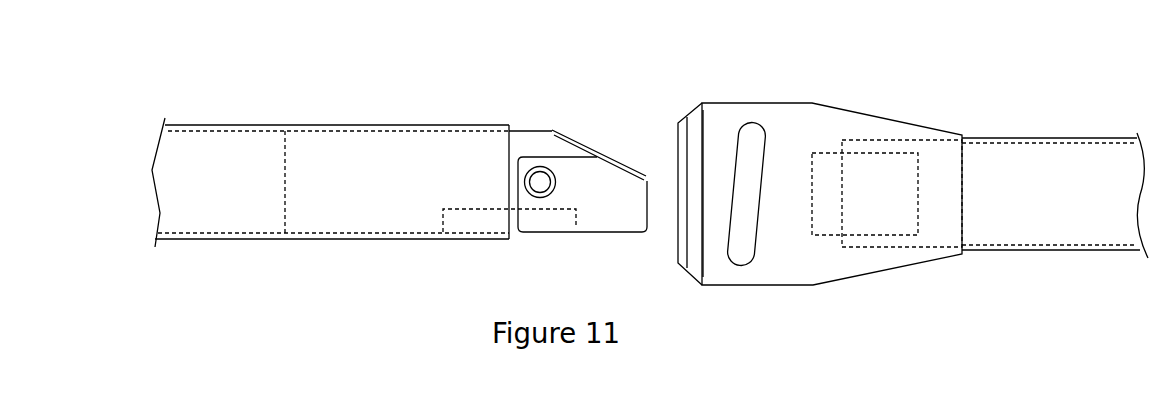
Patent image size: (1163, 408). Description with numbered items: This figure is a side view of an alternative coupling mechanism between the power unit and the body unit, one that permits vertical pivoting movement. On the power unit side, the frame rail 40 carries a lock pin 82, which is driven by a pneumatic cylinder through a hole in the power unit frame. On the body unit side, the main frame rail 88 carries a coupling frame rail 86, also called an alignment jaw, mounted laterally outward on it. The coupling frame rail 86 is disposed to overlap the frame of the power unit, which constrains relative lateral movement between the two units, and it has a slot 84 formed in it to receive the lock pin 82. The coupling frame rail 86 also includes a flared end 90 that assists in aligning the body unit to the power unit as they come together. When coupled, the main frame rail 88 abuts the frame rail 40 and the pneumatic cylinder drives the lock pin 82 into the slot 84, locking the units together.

The frame rail 40 is at (313, 125).
The lock pin 82 is at (543, 158).
The slot 84 is at (755, 228).
The coupling frame rail 86 is at (822, 102).
The main frame rail 88 is at (1037, 135).
The flared end 90 is at (687, 118).